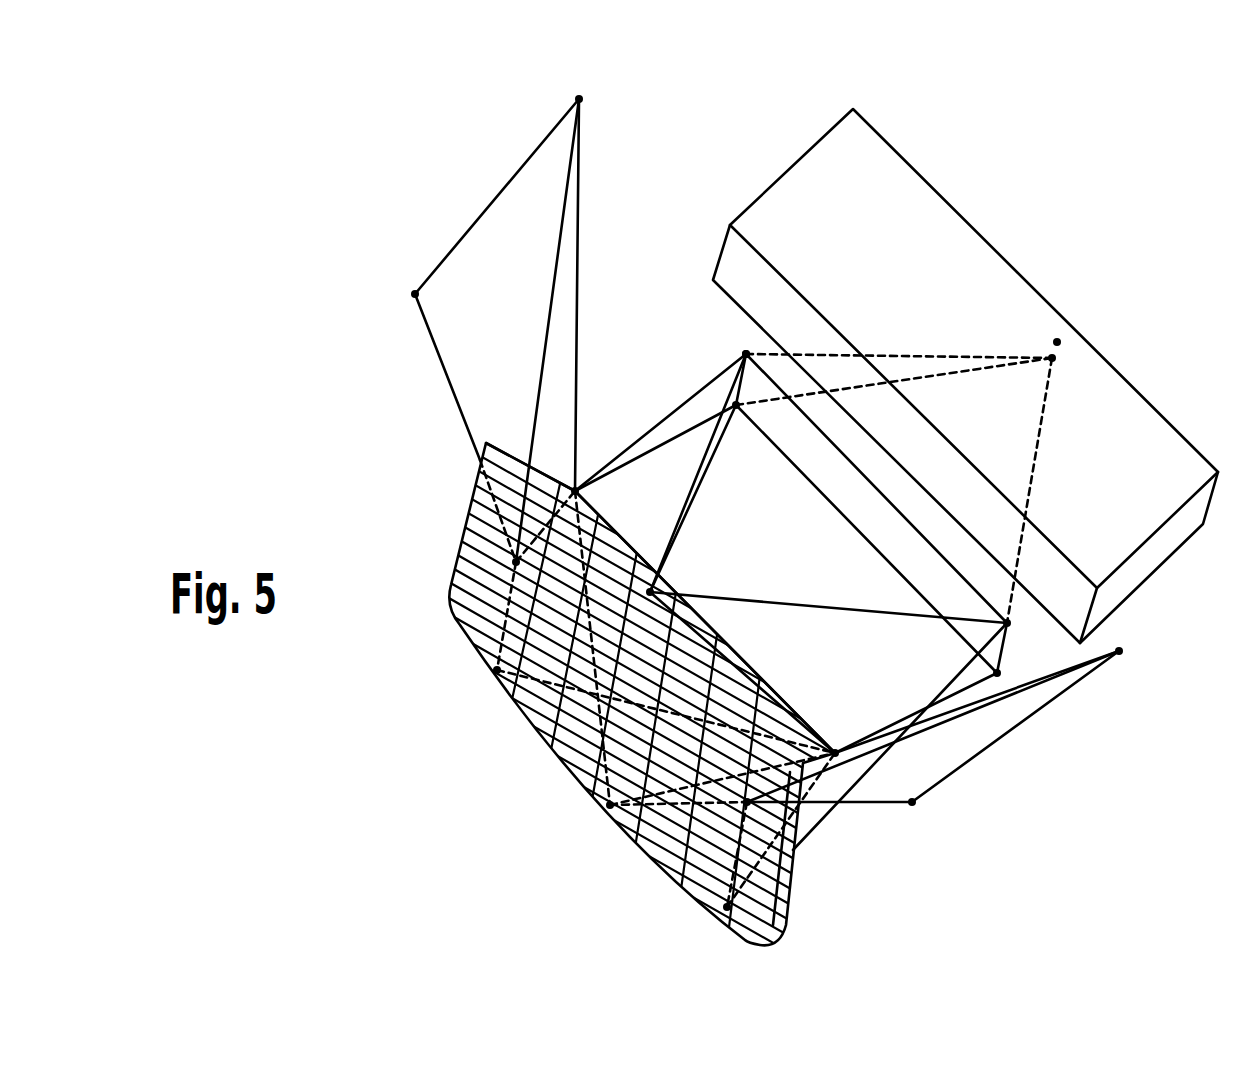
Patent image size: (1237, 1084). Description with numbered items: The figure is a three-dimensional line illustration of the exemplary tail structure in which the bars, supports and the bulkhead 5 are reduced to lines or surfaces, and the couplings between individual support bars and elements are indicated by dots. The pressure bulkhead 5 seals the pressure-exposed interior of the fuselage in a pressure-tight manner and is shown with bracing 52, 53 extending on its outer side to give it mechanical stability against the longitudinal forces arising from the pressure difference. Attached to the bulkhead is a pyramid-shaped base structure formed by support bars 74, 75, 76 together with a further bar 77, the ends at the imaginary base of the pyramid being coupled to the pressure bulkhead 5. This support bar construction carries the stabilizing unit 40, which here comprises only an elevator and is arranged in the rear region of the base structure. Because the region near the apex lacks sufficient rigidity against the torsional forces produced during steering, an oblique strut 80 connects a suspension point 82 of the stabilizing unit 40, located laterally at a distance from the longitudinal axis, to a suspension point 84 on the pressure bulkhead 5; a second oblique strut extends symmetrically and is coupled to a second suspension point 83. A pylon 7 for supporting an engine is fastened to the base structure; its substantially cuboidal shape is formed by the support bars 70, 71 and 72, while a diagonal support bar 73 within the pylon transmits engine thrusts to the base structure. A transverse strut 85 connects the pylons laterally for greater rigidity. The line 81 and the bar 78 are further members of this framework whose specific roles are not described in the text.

The pressure bulkhead 5 is at (457, 557).
The pylon 7 is at (385, 361).
The stabilizing unit 40 is at (1102, 397).
The bracing 52 is at (497, 672).
The bracing 53 is at (608, 804).
The support bar 70 is at (578, 250).
The support bar 71 is at (488, 210).
The support bar 72 is at (462, 424).
The diagonal support bar 73 is at (550, 328).
The support bar 74 is at (902, 718).
The support bar 75 is at (655, 423).
The support bar 76 is at (896, 778).
The support bar 77 is at (840, 803).
The strut 78 is at (936, 716).
The oblique strut 80 is at (812, 607).
The strut 81 is at (708, 467).
The suspension point 82 is at (1015, 634).
The second suspension point 83 is at (742, 351).
The suspension point 84 is at (655, 588).
The transverse strut 85 is at (792, 710).